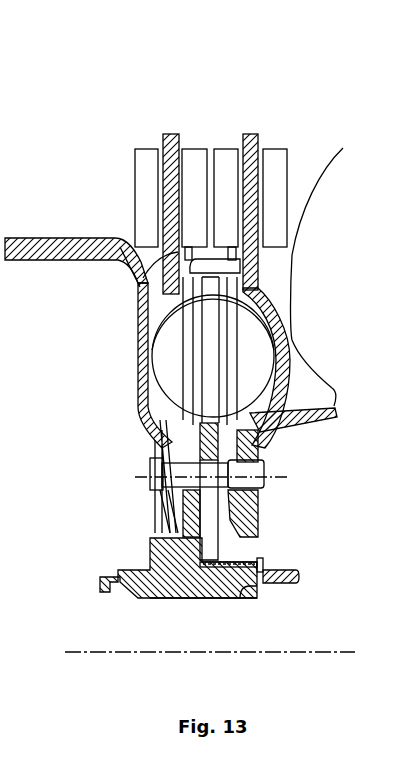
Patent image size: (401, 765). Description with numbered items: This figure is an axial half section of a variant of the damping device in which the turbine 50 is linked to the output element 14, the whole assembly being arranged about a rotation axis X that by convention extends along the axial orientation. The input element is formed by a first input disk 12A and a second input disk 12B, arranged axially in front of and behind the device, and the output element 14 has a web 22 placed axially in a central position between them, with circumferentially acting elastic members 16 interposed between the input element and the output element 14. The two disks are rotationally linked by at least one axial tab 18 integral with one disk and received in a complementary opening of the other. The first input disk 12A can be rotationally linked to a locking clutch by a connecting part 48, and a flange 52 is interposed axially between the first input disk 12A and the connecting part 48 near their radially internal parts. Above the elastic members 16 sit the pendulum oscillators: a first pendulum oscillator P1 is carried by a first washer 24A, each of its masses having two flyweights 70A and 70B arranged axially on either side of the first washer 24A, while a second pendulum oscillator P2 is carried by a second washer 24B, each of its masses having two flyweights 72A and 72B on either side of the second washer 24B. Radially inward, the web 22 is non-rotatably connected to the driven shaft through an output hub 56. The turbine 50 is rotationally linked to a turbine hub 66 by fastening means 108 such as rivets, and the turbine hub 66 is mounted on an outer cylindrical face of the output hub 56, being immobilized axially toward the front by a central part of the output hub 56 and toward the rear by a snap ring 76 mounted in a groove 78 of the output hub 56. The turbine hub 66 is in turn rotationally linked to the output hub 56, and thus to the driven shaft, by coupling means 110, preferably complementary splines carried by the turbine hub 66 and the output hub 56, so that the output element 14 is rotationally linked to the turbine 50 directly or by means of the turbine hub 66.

The first pendulum oscillator P1 is at (122, 140).
The second pendulum oscillator P2 is at (304, 134).
The connecting part 48 is at (66, 240).
The flyweight 70A is at (146, 206).
The flyweight 70B is at (194, 160).
The flyweight 72A is at (224, 160).
The flyweight 72B is at (276, 180).
The first washer 24A is at (140, 274).
The second washer 24B is at (268, 220).
The axial tab 18 is at (268, 265).
The turbine 50 is at (312, 374).
The circumferentially acting elastic member 16 is at (170, 365).
The first input disk 12A is at (164, 438).
The second input disk 12B is at (258, 438).
The web 22 is at (156, 474).
The fastening means 108 is at (262, 470).
The flange 52 is at (172, 518).
The turbine hub 66 is at (262, 518).
The output element 14 is at (160, 550).
The output hub 56 is at (172, 588).
The snap ring 76 is at (262, 564).
The groove 78 is at (262, 588).
The coupling means 110 is at (252, 596).
The rotation axis X is at (68, 650).